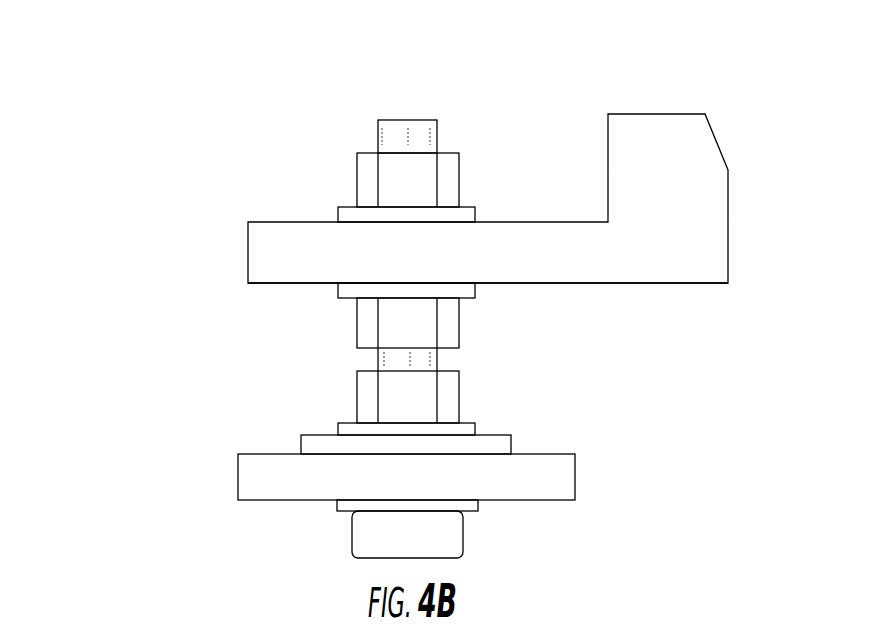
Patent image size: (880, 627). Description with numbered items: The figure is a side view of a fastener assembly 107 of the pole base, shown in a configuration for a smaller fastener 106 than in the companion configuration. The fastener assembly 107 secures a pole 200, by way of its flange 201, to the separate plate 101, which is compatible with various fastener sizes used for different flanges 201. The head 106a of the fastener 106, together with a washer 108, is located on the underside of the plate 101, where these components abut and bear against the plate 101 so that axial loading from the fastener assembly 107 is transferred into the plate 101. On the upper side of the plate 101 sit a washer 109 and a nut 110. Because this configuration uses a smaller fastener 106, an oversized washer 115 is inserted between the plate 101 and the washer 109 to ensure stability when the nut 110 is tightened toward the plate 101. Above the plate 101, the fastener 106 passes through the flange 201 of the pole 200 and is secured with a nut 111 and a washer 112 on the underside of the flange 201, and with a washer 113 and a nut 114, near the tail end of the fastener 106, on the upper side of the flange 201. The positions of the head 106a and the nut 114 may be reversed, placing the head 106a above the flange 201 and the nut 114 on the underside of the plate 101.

The plate 101 is at (560, 473).
The fastener 106 is at (402, 133).
The head 106a is at (380, 541).
The fastener assembly 107 is at (145, 218).
The washer 108 is at (345, 507).
The washer 109 is at (360, 430).
The nut 110 is at (372, 403).
The nut 111 is at (370, 327).
The washer 112 is at (356, 291).
The washer 113 is at (356, 218).
The nut 114 is at (365, 183).
The oversized washer 115 is at (318, 445).
The pole 200 is at (692, 137).
The flange 201 is at (518, 256).